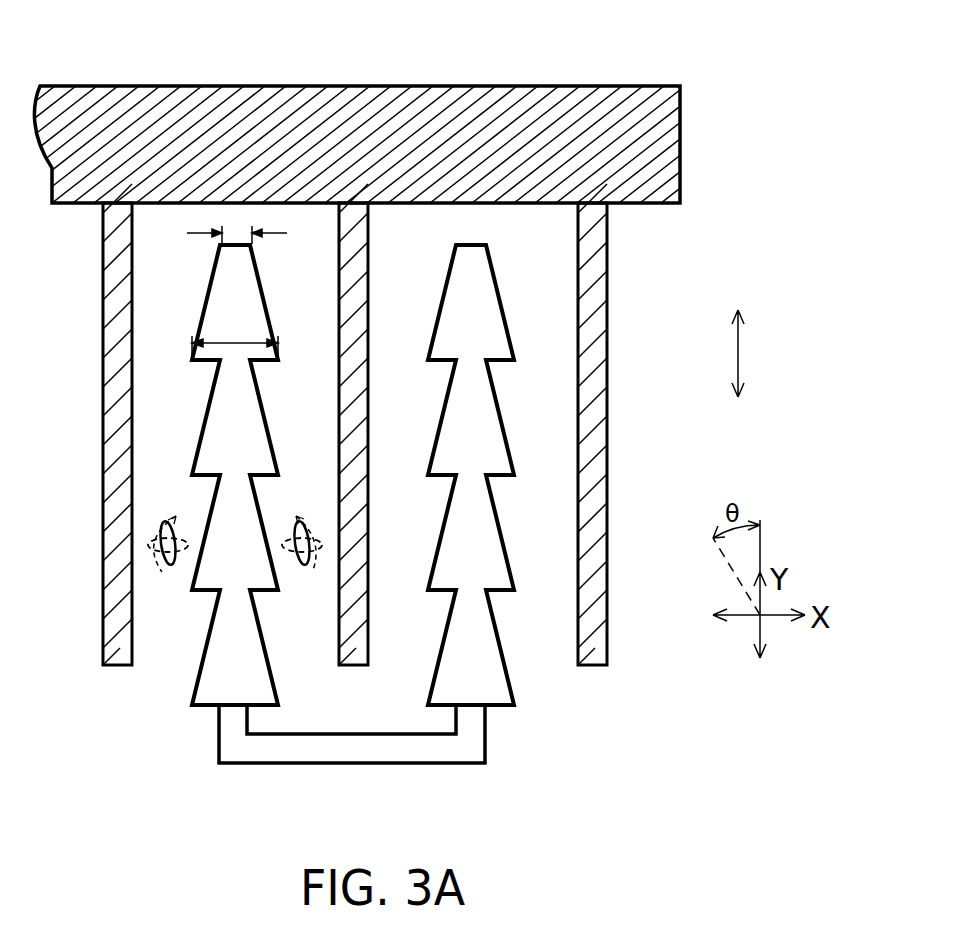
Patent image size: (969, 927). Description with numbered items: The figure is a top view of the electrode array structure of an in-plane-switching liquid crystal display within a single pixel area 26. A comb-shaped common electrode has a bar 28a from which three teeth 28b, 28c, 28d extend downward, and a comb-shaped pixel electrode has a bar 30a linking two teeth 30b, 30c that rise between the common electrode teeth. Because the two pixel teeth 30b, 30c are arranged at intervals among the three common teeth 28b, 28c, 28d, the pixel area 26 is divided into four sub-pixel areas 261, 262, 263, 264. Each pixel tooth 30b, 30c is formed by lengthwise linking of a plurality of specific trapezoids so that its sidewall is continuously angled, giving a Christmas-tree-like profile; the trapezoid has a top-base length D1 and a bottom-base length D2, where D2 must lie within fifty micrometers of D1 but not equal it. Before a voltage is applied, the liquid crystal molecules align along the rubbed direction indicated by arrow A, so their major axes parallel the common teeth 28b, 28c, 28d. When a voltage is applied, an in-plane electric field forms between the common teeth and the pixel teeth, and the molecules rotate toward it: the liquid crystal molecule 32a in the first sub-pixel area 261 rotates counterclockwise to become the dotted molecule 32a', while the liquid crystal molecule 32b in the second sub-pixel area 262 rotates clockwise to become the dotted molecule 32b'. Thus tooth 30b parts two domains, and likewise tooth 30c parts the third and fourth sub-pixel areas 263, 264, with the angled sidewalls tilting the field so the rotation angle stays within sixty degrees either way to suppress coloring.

The pixel area 26 is at (742, 234).
The bar 28a is at (640, 93).
The tooth 28b is at (132, 432).
The tooth 28c is at (369, 433).
The tooth 28d is at (577, 437).
The first sub-pixel area 261 is at (165, 222).
The second sub-pixel area 262 is at (313, 222).
The third sub-pixel area 263 is at (403, 222).
The fourth sub-pixel area 264 is at (551, 222).
The bar 30a is at (390, 755).
The tooth 30b is at (297, 404).
The tooth 30c is at (503, 567).
The liquid crystal molecule 32a is at (174, 525).
The liquid crystal molecule 32b is at (307, 524).
The dotted molecule 32a' is at (161, 576).
The dotted molecule 32b' is at (311, 576).
The top-base length D1 is at (254, 237).
The bottom-base length D2 is at (235, 333).
The arrow A is at (738, 350).